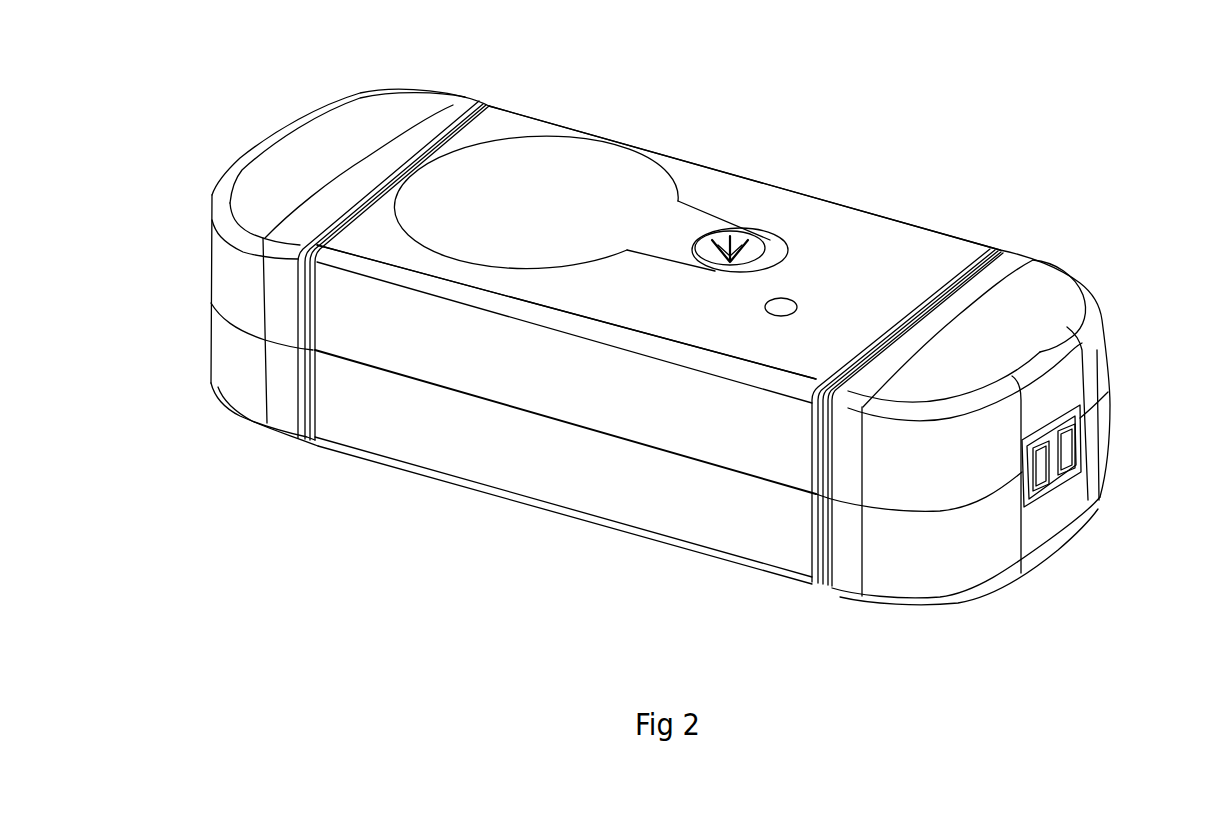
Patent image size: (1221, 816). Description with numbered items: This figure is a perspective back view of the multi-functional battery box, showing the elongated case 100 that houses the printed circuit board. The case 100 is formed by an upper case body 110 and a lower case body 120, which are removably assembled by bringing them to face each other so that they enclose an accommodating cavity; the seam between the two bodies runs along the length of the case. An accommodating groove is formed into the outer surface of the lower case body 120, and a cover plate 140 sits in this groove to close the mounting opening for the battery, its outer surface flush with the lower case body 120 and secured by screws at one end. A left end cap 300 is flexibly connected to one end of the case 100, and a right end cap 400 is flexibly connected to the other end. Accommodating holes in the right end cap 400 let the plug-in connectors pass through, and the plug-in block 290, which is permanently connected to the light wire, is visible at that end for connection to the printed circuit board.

The case 100 is at (733, 172).
The upper case body 110 is at (497, 452).
The lower case body 120 is at (841, 240).
The cover plate 140 is at (600, 173).
The plug-in block 290 is at (1060, 478).
The left end cap 300 is at (289, 172).
The right end cap 400 is at (927, 567).